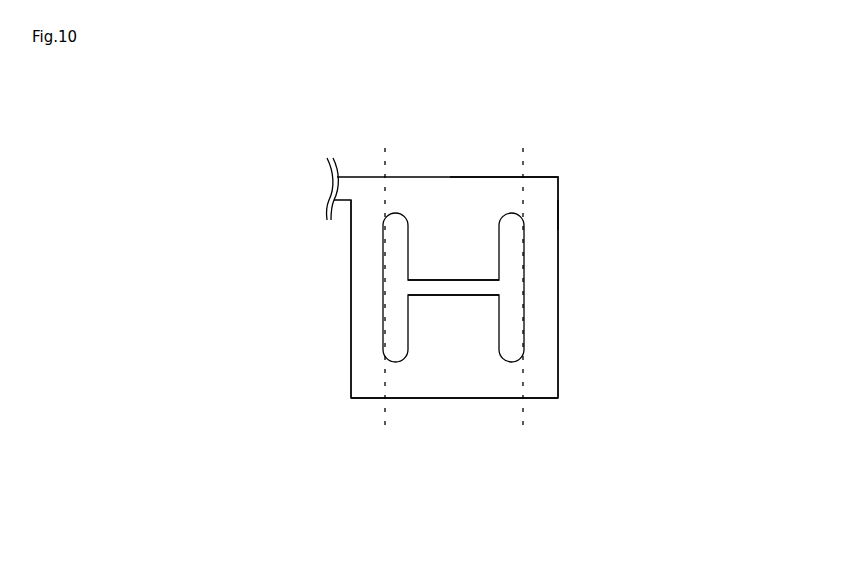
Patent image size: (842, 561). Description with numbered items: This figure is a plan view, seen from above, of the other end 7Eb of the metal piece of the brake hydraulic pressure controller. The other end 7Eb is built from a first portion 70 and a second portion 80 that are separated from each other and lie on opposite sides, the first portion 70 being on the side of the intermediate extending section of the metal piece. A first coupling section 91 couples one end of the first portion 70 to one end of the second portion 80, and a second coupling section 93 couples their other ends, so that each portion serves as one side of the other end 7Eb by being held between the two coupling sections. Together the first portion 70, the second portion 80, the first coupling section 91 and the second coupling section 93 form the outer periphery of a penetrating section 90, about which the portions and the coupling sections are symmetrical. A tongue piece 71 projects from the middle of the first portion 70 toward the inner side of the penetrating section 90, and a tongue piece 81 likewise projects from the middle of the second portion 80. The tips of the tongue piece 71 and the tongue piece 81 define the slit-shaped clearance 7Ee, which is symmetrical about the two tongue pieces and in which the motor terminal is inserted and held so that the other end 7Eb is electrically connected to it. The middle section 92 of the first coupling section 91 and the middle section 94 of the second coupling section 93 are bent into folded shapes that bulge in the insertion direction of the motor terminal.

The second portion 80 is at (487, 383).
The tongue piece 81 is at (473, 317).
The penetrating section 90 is at (525, 280).
The first coupling section 91 is at (363, 370).
The middle section 92 is at (367, 303).
The second coupling section 93 is at (543, 200).
The middle section 94 is at (545, 260).
The first portion 70 is at (442, 200).
The tongue piece 71 is at (455, 265).
The other end 7Eb is at (320, 150).
The slit-shaped clearance 7Ee is at (447, 283).